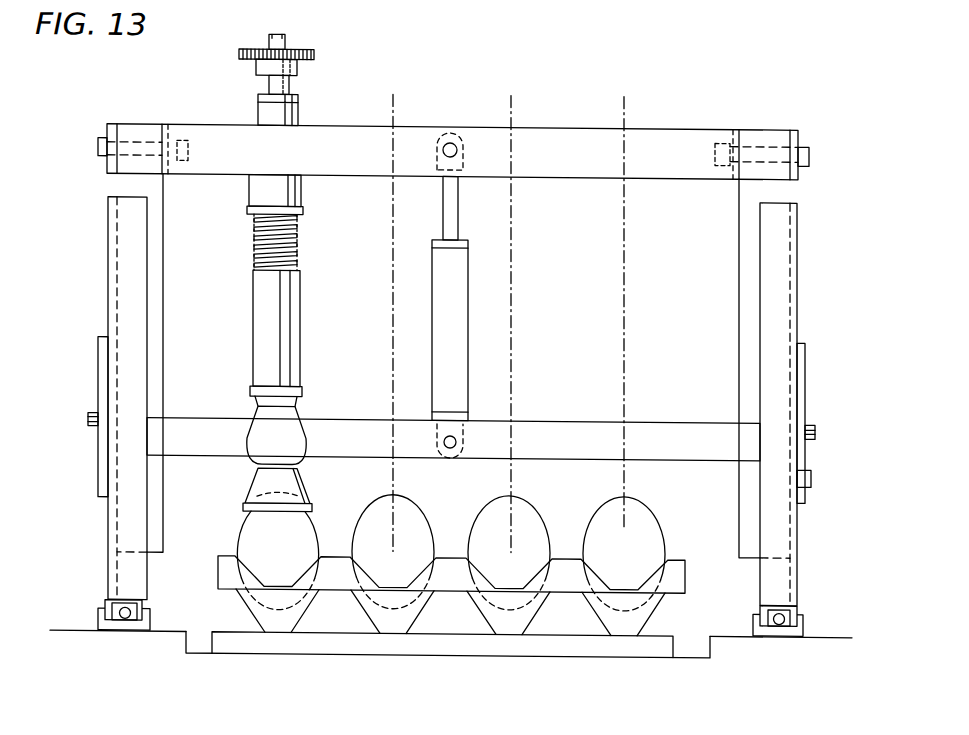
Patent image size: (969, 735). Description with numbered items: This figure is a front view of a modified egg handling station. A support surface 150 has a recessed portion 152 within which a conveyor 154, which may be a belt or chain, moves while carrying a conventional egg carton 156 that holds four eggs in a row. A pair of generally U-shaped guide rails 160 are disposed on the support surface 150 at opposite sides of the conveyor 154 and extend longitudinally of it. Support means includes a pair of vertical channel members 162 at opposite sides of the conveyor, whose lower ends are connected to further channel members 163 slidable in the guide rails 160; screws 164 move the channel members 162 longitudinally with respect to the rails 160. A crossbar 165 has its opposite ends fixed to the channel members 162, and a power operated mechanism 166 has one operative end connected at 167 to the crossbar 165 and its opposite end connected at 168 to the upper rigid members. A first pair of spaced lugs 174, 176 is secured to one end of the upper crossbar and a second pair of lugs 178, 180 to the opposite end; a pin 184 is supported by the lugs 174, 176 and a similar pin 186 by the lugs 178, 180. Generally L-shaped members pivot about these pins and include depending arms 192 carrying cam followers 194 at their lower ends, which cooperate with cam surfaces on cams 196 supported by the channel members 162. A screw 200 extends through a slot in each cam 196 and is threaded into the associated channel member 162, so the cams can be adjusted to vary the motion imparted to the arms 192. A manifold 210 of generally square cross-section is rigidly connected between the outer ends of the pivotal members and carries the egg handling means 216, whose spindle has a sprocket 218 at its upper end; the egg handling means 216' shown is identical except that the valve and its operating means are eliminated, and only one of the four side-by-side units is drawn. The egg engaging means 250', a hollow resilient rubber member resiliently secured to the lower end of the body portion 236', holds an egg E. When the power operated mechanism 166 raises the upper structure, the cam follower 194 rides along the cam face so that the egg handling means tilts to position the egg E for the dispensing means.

The support surface 150 is at (65, 632).
The recessed portion 152 is at (200, 655).
The conveyor 154 is at (652, 655).
The egg carton 156 is at (247, 609).
The guide rails 160 is at (100, 614).
The vertical channel members 162 is at (108, 279).
The further channel members 163 is at (120, 603).
The screws 164 is at (135, 608).
The crossbar 165 is at (561, 434).
The power operated mechanism 166 is at (470, 267).
The connection to crossbar 167 is at (453, 448).
The connection to upper members 168 is at (458, 146).
The lug 174 is at (110, 127).
The lug 176 is at (181, 132).
The lug 178 is at (713, 128).
The lug 180 is at (795, 128).
The pin 184 is at (98, 153).
The pin 186 is at (810, 152).
The depending arms 192 is at (148, 283).
The cam followers 194 is at (811, 478).
The cams 196 is at (806, 360).
The screw 200 is at (812, 440).
The manifold 210 is at (665, 132).
The egg handling means 216 is at (306, 68).
The egg handling means 216' is at (313, 223).
The sprocket 218 is at (241, 53).
The body portion 236' is at (244, 366).
The egg engaging means 250' is at (248, 489).
The egg E is at (318, 530).